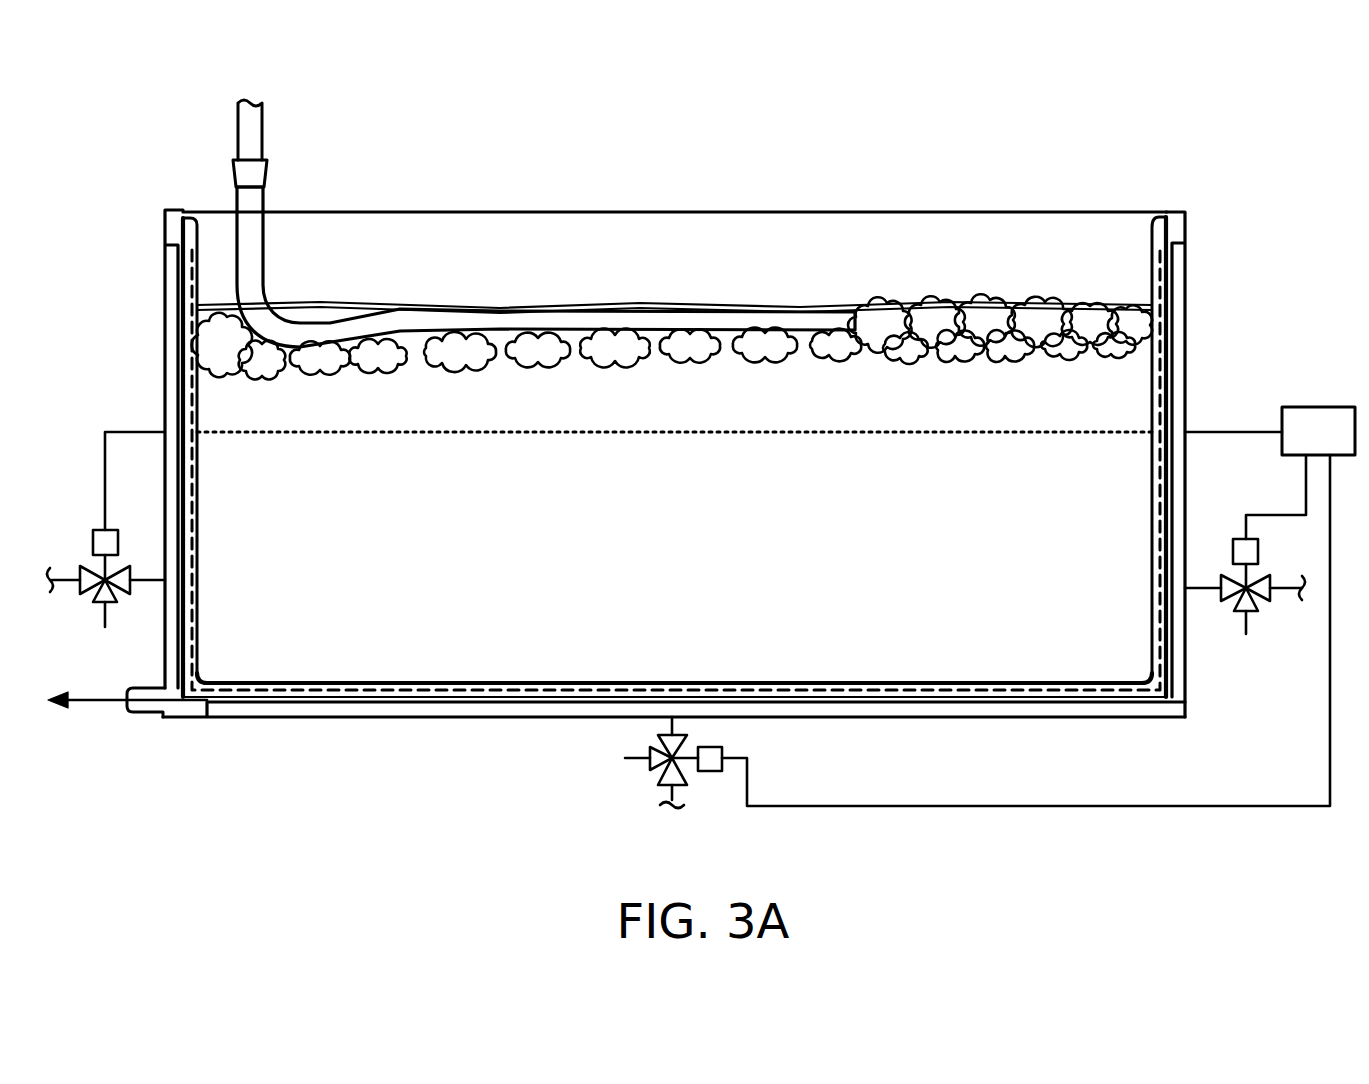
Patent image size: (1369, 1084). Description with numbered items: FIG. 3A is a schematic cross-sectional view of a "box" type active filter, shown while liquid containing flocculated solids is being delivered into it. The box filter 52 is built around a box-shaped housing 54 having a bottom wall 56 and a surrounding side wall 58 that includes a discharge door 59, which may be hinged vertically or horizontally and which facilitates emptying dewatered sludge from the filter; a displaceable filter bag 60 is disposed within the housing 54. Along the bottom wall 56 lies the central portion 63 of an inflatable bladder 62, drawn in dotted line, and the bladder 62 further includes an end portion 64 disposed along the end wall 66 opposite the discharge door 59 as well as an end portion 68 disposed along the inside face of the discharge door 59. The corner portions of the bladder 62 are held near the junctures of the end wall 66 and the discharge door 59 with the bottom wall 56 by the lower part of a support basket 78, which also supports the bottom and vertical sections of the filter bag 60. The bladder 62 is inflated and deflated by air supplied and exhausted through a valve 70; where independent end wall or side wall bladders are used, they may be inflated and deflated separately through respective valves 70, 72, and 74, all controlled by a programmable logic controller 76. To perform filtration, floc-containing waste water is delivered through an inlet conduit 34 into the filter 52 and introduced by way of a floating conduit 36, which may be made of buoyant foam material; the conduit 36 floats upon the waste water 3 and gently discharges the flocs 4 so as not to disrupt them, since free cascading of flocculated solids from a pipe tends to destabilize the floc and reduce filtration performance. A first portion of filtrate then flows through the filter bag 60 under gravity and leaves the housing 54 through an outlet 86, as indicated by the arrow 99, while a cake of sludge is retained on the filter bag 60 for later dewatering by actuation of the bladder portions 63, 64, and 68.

The waste water 3 is at (336, 305).
The flocs 4 is at (452, 355).
The inlet conduit 34 is at (264, 143).
The floating conduit 36 is at (680, 320).
The box filter 52 is at (1023, 142).
The housing 54 is at (130, 240).
The bottom wall 56 is at (843, 717).
The side wall 58 is at (809, 252).
The discharge door 59 is at (1185, 303).
The filter bag 60 is at (197, 395).
The inflatable bladder 62 is at (490, 690).
The central portion 63 is at (598, 690).
The end portion 64 is at (190, 375).
The end wall 66 is at (165, 398).
The end portion 68 is at (1166, 380).
The valve 70 is at (668, 762).
The valve 72 is at (105, 582).
The valve 74 is at (1250, 590).
The programmable logic controller 76 is at (1318, 407).
The support basket 78 is at (1160, 282).
The outlet 86 is at (143, 715).
The arrow 99 is at (82, 710).